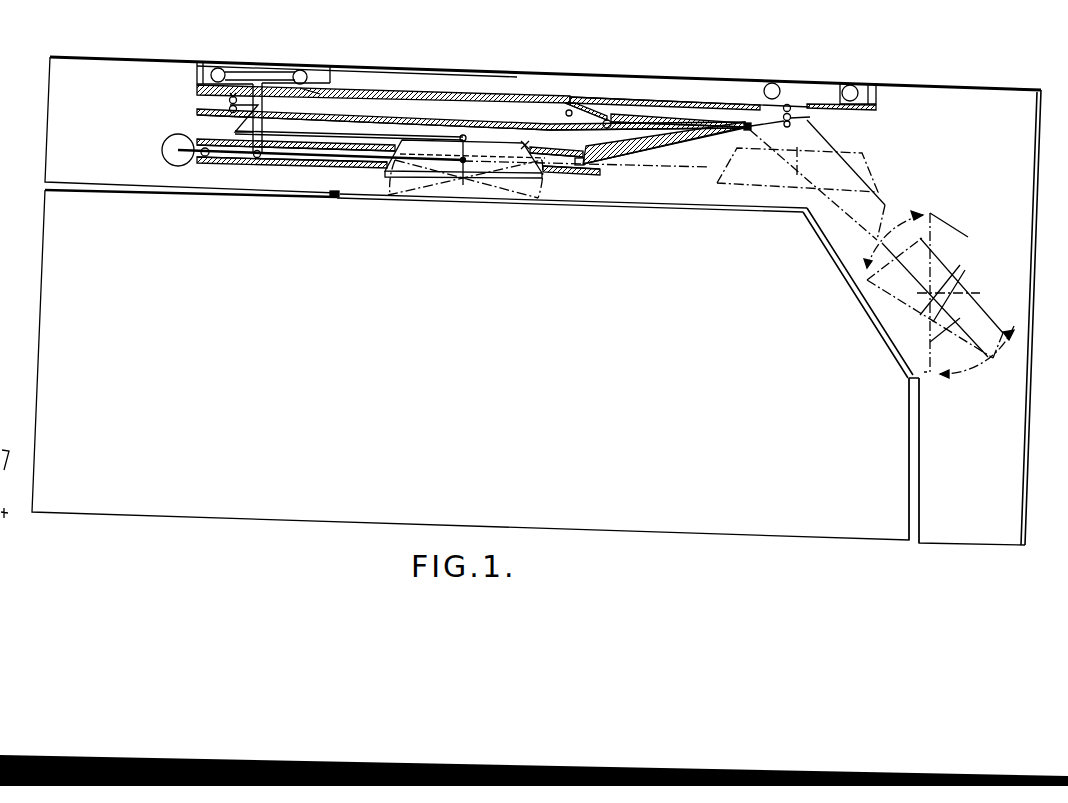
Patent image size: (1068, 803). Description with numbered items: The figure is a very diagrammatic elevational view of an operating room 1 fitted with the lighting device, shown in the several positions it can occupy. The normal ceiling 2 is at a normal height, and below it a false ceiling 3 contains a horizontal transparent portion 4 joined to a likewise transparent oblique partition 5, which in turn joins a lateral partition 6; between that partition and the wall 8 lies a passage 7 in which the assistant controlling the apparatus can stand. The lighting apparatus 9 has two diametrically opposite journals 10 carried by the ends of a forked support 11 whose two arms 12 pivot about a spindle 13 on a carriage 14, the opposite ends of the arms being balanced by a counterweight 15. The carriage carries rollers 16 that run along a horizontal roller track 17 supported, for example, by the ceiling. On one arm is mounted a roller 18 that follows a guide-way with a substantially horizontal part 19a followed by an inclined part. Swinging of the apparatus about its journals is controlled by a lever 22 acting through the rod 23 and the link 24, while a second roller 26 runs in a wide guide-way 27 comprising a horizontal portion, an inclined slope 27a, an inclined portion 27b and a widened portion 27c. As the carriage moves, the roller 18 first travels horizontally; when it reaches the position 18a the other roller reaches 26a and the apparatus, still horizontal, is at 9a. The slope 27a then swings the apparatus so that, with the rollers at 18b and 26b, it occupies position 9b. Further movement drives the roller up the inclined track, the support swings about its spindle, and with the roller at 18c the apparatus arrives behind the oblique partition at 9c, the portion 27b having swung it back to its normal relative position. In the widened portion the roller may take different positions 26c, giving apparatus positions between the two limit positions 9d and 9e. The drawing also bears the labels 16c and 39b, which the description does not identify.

The operating room 1 is at (42, 320).
The ceiling 2 is at (150, 57).
The false ceiling 3 is at (298, 195).
The horizontal transparent portion 4 is at (490, 201).
The oblique partition 5 is at (850, 276).
The lateral partition 6 is at (912, 467).
The passage 7 is at (1002, 495).
The wall 8 is at (1030, 443).
The lighting apparatus 9 is at (527, 146).
The position of the lighting apparatus 9a is at (808, 192).
The position of the lighting apparatus 9b is at (884, 198).
The position of the lighting apparatus 9c is at (962, 284).
The limit position of the lighting apparatus 9d is at (940, 222).
The limit position of the lighting apparatus 9e is at (1008, 330).
The journals 10 is at (462, 164).
The forked support 11 is at (416, 165).
The arms 12 is at (333, 165).
The spindle 13 is at (254, 158).
The carriage 14 is at (255, 82).
The counterweight 15 is at (176, 165).
The rollers 16 is at (218, 66).
The right bearing 16c is at (772, 83).
The roller track 17 is at (408, 90).
The roller 18 is at (207, 157).
The position of the roller 18a is at (553, 170).
The position of the roller 18b is at (581, 167).
The position of the roller 18c is at (747, 122).
The horizontal part of the guide-way 19a is at (365, 165).
The lever 22 is at (207, 116).
The rod 23 is at (298, 137).
The link 24 is at (467, 139).
The roller 26 is at (229, 101).
The position of the roller 26a is at (571, 109).
The position of the roller 26b is at (610, 120).
The guide-way 27 is at (308, 94).
The inclined slope 27a is at (586, 110).
The inclined portion 27b is at (647, 119).
The widened portion 27c is at (789, 105).
The positions of the roller 26c is at (792, 112).
The wedge 39b is at (670, 148).